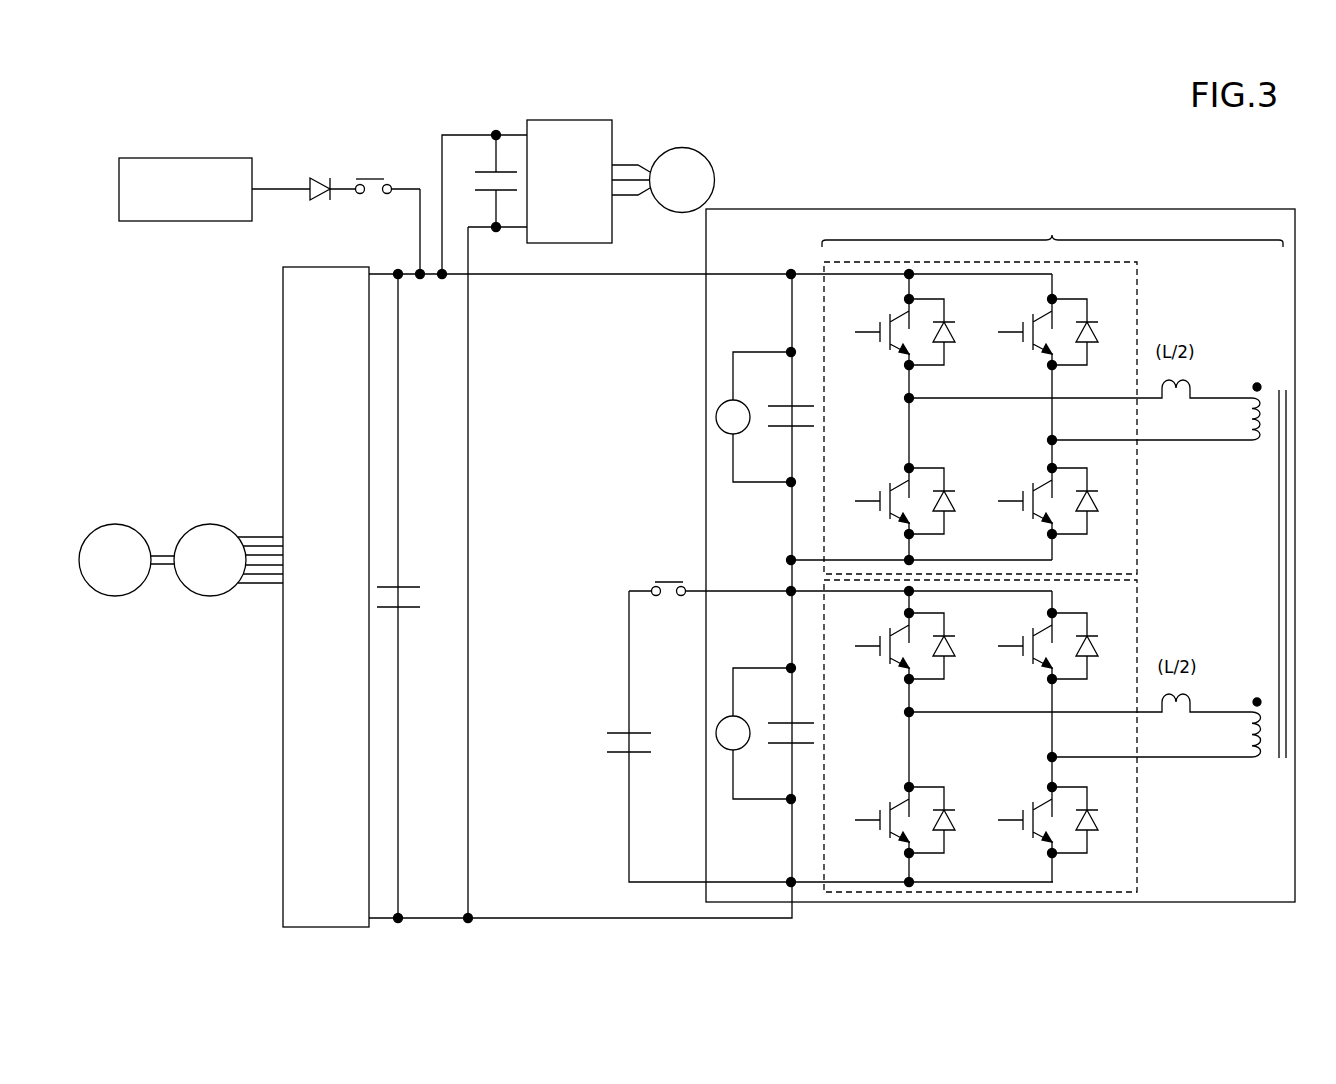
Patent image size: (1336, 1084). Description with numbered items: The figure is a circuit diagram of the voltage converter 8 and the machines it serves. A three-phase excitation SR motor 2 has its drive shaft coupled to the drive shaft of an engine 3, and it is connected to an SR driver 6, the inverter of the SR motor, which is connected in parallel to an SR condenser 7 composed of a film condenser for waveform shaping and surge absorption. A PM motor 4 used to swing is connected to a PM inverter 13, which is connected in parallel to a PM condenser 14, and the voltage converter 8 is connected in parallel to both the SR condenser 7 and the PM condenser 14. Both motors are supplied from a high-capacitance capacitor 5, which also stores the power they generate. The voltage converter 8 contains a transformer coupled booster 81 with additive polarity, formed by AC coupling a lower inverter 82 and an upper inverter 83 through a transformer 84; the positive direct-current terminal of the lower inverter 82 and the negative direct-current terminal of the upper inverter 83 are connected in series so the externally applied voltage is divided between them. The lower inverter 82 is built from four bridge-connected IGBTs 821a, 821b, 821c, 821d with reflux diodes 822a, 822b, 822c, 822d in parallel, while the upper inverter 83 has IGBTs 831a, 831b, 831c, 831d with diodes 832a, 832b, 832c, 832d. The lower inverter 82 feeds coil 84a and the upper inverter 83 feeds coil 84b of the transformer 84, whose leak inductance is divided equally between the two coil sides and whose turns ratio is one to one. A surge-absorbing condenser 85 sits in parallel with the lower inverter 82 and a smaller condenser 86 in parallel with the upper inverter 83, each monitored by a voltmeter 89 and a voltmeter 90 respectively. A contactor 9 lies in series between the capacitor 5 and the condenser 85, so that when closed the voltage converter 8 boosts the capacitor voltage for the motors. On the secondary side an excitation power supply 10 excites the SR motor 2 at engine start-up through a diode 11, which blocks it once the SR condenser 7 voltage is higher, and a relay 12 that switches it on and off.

The SR motor 2 is at (227, 526).
The engine 3 is at (130, 527).
The PM motor 4 is at (712, 165).
The capacitor 5 is at (633, 733).
The SR driver 6 is at (322, 267).
The SR condenser 7 is at (405, 587).
The voltage converter 8 is at (1193, 209).
The contactor 9 is at (664, 582).
The excitation power supply 10 is at (212, 158).
The diode 11 is at (318, 181).
The relay 12 is at (372, 179).
The PM inverter 13 is at (612, 146).
The PM condenser 14 is at (480, 172).
The transformer coupled booster 81 is at (1052, 229).
The lower inverter 82 is at (1140, 609).
The upper inverter 83 is at (1140, 291).
The transformer 84 is at (1270, 531).
The coil 84a is at (1253, 697).
The coil 84b is at (1252, 382).
The condenser 85 is at (770, 723).
The condenser 86 is at (770, 406).
The voltmeter 89 is at (744, 747).
The voltmeter 90 is at (744, 430).
The IGBT 831a is at (891, 316).
The IGBT 831b is at (1034, 316).
The IGBT 831c is at (891, 485).
The IGBT 831d is at (1034, 485).
The diode 832a is at (957, 336).
The diode 832b is at (1099, 338).
The diode 832c is at (957, 506).
The diode 832d is at (1099, 495).
The IGBT 821a is at (891, 630).
The IGBT 821b is at (1034, 630).
The IGBT 821c is at (891, 804).
The IGBT 821d is at (1034, 804).
The diode 822a is at (957, 650).
The diode 822b is at (1099, 652).
The diode 822c is at (957, 825).
The diode 822d is at (1099, 813).